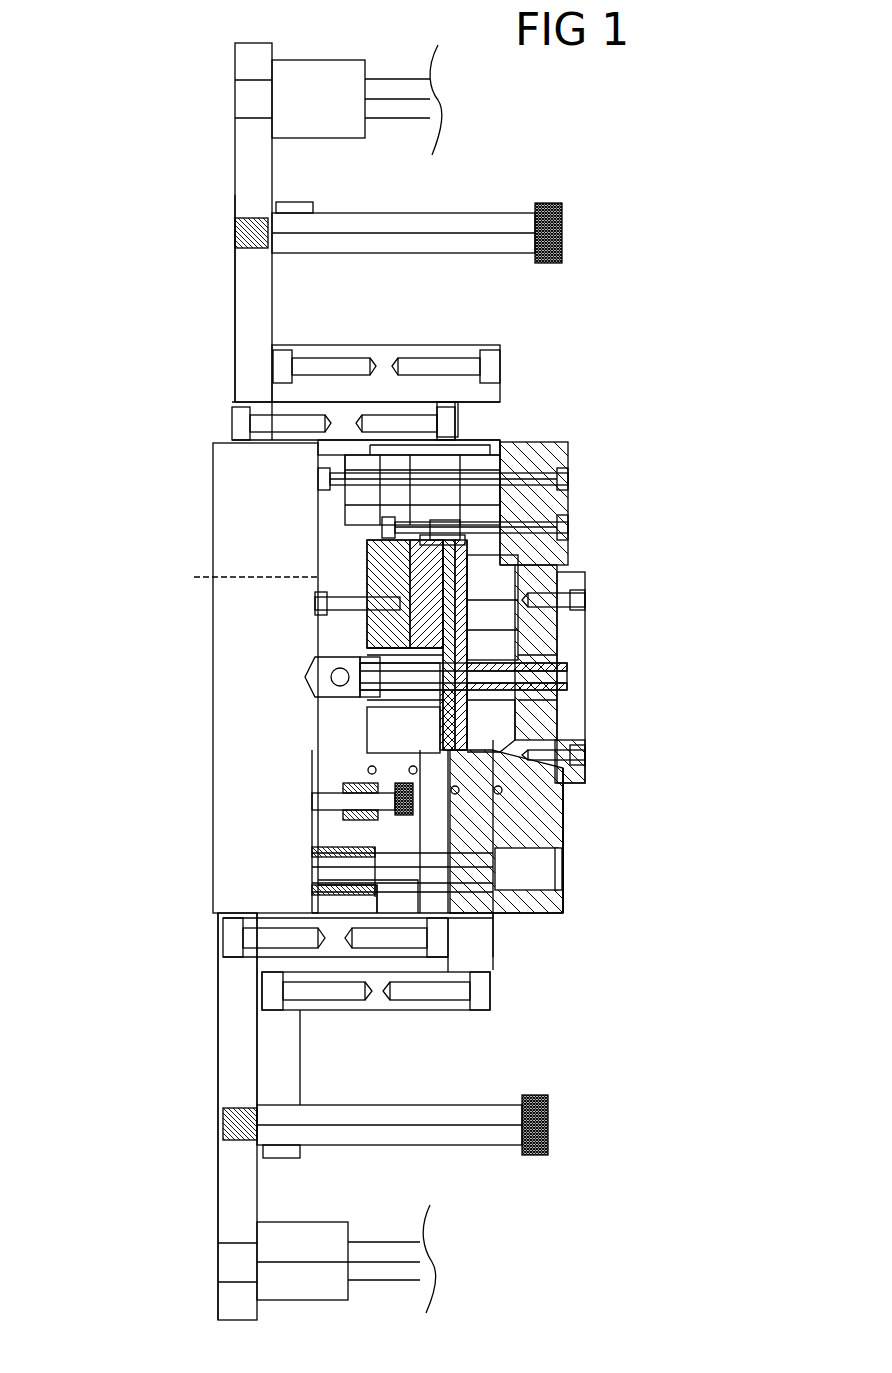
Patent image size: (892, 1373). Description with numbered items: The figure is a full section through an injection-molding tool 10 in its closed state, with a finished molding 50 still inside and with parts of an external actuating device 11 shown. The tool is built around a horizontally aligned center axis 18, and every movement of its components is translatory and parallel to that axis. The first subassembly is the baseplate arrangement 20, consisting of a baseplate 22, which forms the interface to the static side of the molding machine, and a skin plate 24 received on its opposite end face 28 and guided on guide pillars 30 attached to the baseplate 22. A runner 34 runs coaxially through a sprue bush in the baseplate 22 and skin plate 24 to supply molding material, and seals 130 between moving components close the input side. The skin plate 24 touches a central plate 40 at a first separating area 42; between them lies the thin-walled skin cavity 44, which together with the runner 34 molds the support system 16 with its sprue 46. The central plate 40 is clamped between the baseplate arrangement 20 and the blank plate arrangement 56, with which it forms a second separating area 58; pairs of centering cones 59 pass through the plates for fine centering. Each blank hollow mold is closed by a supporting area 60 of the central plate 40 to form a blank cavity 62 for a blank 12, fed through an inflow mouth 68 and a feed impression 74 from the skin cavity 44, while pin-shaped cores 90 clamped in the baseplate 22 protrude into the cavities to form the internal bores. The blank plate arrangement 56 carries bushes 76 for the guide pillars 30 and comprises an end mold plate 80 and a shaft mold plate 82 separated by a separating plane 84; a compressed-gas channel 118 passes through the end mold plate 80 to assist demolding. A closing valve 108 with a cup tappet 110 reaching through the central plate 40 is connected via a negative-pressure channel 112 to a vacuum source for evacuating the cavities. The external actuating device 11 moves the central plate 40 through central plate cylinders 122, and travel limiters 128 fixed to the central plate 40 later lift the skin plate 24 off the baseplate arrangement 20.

The injection-molding tool 10 is at (78, 211).
The external actuating device 11 is at (235, 176).
The blank 12 is at (370, 545).
The support system 16 is at (563, 705).
The center axis 18 is at (667, 672).
The baseplate arrangement 20 is at (527, 447).
The baseplate 22 is at (567, 443).
The skin plate 24 is at (470, 585).
The end face 28 is at (470, 592).
The guide pillar 30 is at (562, 872).
The runner 34 is at (563, 682).
The central plate 40 is at (442, 445).
The first separating area 42 is at (470, 738).
The skin cavity 44 is at (594, 672).
The sprue 46 is at (568, 653).
The molding 50 is at (213, 677).
The blank plate arrangement 56 is at (209, 481).
The second separating area 58 is at (547, 792).
The centering cone 59 is at (408, 462).
The supporting area 60 is at (443, 547).
The blank cavity 62 is at (438, 547).
The inflow mouth 68 is at (514, 456).
The feed impression 74 is at (568, 480).
The bush 76 is at (315, 250).
The end mold plate 80 is at (370, 555).
The shaft mold plate 82 is at (375, 630).
The separating plane 84 is at (370, 735).
The core 90 is at (570, 513).
The closing valve 108 is at (345, 700).
The cup tappet 110 is at (222, 752).
The negative-pressure channel 112 is at (340, 688).
The compressed-gas channel 118 is at (222, 580).
The central plate cylinder 122 is at (340, 128).
The travel limiter 128 is at (498, 213).
The seal 130 is at (563, 900).